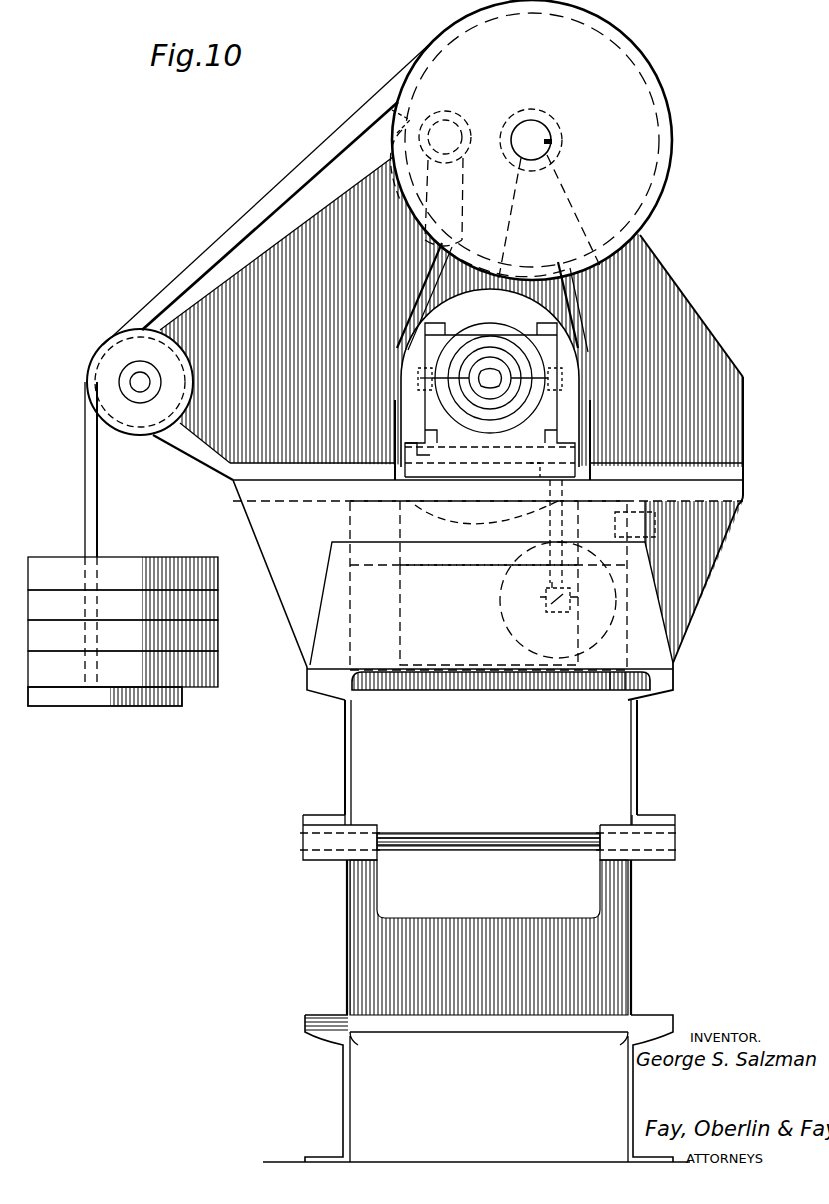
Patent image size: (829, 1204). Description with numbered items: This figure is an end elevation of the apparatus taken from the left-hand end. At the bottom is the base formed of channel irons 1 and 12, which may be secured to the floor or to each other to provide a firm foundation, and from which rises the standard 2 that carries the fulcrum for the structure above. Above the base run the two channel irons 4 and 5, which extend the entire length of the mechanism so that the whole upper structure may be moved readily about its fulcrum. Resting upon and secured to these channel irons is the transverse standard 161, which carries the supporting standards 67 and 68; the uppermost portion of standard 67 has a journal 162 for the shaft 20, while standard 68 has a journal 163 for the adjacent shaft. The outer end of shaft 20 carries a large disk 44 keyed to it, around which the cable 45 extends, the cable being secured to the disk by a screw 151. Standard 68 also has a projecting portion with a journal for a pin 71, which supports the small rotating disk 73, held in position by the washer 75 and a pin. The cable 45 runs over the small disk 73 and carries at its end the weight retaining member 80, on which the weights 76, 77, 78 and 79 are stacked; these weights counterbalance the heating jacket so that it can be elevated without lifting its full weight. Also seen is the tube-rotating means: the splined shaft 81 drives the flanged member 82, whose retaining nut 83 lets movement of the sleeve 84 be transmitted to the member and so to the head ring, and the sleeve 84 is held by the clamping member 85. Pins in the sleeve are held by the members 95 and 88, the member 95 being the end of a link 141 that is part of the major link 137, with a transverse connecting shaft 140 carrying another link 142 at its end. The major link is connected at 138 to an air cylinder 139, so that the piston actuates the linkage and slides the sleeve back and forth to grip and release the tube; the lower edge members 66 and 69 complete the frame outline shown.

The channel iron 1 is at (628, 1057).
The standard 2 is at (631, 958).
The channel iron 4 is at (637, 745).
The channel iron 5 is at (351, 756).
The channel iron 12 is at (343, 1057).
The shaft 20 is at (537, 141).
The large disk 44 is at (532, 140).
The cable 45 is at (268, 197).
The base plate 66 is at (742, 470).
The supporting standard 67 is at (742, 416).
The supporting standard 68 is at (215, 456).
The frame edge 69 is at (255, 484).
The pin 71 is at (146, 392).
The rotating disk 73 is at (105, 392).
The washer 75 is at (125, 393).
The weight 76 is at (123, 573).
The weight 77 is at (123, 605).
The weight 78 is at (123, 635).
The weight 79 is at (123, 669).
The weight retaining member 80 is at (83, 704).
The shaft 81 is at (482, 393).
The member 82 is at (500, 373).
The retaining nut 83 is at (497, 363).
The sleeve 84 is at (494, 348).
The clamping member 85 is at (490, 330).
The member 88 is at (420, 381).
The member 95 is at (556, 383).
The major link 137 is at (614, 518).
The connection 138 is at (551, 606).
The air cylinder 139 is at (520, 686).
The connecting shaft 140 is at (497, 475).
The link 141 is at (540, 478).
The link 142 is at (417, 452).
The screw 151 is at (396, 120).
The transverse standard 161 is at (290, 612).
The journal 162 is at (542, 130).
The journal 163 is at (456, 117).